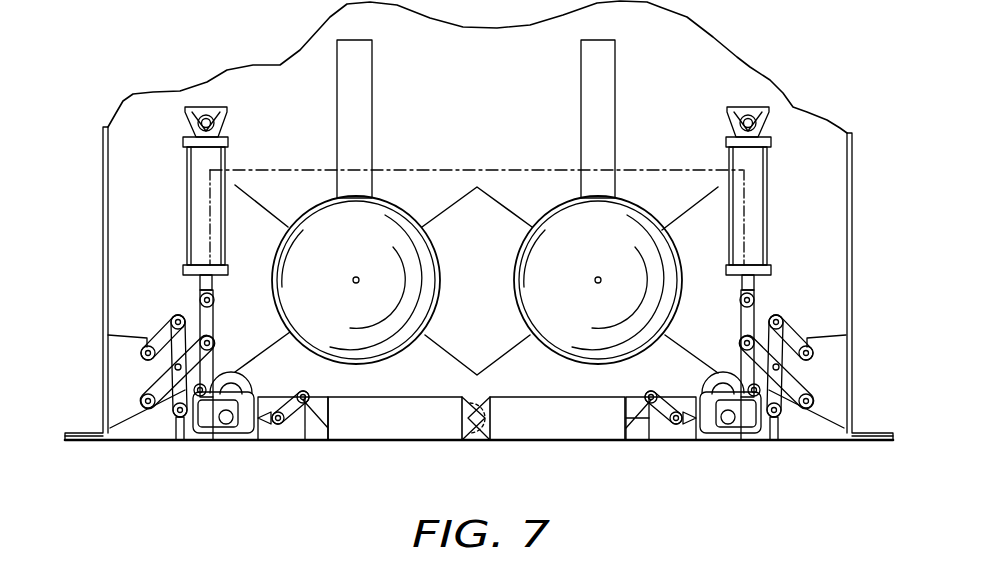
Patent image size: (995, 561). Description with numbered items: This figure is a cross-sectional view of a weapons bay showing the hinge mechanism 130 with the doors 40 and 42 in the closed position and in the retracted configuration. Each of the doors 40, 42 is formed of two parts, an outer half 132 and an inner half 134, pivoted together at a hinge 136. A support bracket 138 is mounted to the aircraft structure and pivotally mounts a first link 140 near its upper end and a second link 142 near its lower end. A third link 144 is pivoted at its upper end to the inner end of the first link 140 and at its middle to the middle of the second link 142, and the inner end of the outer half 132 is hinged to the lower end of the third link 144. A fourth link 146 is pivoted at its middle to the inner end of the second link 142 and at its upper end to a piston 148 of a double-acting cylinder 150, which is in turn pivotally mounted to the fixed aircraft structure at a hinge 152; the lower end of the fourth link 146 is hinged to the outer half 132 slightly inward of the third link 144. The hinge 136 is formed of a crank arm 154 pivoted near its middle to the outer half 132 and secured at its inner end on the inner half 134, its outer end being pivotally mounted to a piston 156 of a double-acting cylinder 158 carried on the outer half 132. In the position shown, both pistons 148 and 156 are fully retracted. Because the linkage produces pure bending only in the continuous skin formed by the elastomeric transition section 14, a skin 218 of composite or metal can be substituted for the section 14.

The elastomeric transition section 14 is at (157, 438).
The skin 218 is at (479, 465).
The door 40 is at (348, 440).
The door 42 is at (552, 440).
The hinge mechanism 130 is at (161, 292).
The outer half 132 is at (267, 433).
The inner half 134 is at (471, 451).
The hinge 136 is at (645, 395).
The support bracket 138 is at (123, 374).
The first link 140 is at (797, 342).
The second link 142 is at (795, 400).
The third link 144 is at (769, 336).
The fourth link 146 is at (748, 328).
The piston 148 is at (740, 283).
The double-acting cylinder 150 is at (768, 187).
The hinge 152 is at (728, 128).
The crank arm 154 is at (668, 437).
The piston 156 is at (677, 415).
The double-acting cylinder 158 is at (725, 433).